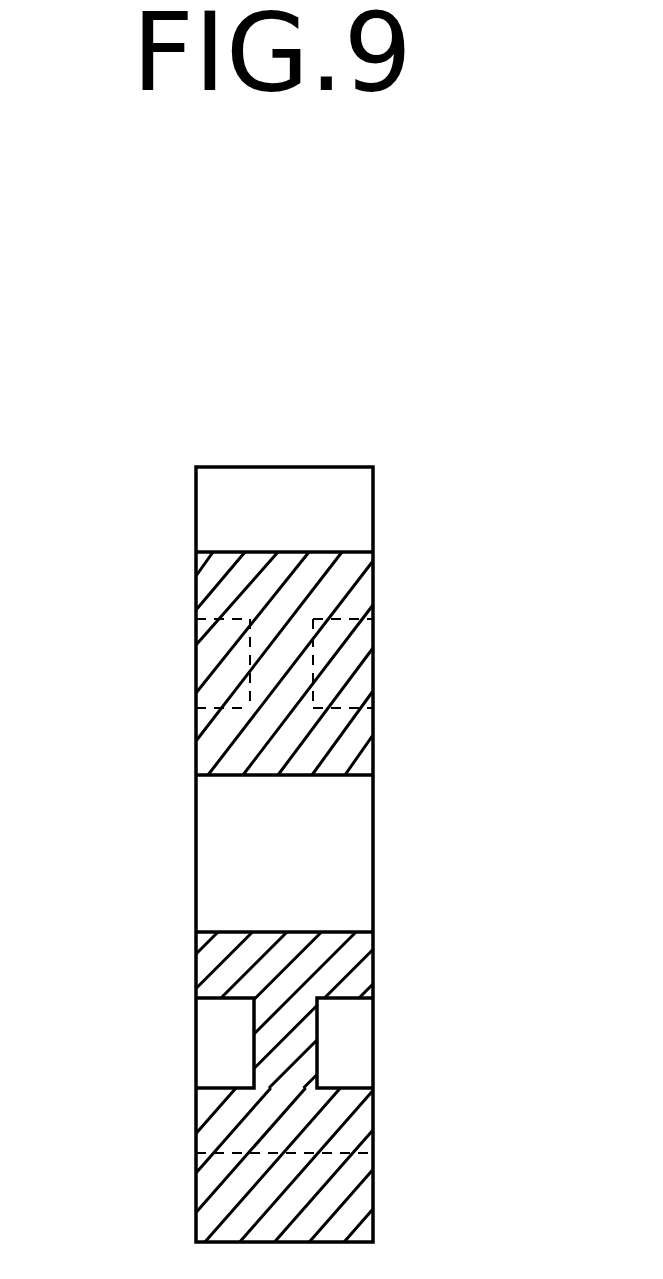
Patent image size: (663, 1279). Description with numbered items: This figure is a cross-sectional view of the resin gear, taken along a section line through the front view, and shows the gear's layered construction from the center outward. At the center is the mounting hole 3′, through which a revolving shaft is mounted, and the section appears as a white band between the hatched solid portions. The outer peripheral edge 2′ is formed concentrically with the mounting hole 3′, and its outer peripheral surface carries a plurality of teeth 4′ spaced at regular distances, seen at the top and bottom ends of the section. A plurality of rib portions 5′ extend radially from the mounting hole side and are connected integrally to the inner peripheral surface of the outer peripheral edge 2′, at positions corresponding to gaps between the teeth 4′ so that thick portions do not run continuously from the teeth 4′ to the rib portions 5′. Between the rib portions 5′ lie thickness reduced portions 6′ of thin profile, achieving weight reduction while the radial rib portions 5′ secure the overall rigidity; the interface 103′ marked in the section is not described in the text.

The outer peripheral edge 2′ is at (196, 577).
The mounting hole 3′ is at (348, 848).
The teeth 4′ is at (373, 501).
The rib portions 5′ is at (208, 656).
The thickness reduced portions 6′ is at (318, 1038).
The boundary interface 103′ is at (206, 741).